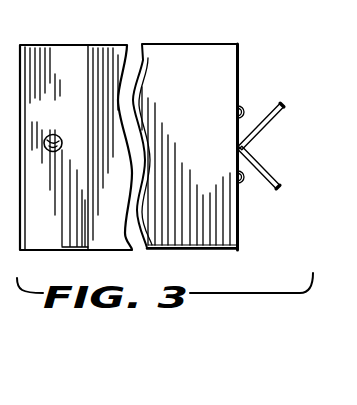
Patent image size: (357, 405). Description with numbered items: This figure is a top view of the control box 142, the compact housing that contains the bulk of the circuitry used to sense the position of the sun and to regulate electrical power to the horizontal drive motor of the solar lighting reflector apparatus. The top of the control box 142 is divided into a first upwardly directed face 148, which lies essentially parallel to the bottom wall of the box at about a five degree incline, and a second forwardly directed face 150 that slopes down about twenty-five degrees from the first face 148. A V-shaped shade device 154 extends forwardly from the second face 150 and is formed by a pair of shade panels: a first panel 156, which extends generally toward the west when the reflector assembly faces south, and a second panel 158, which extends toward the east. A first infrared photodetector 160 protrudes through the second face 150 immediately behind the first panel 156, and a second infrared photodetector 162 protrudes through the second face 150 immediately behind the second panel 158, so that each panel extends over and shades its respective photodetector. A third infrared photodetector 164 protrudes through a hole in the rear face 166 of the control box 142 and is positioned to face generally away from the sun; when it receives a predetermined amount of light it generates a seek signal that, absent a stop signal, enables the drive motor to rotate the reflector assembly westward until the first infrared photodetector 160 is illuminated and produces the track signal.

The control box 142 is at (187, 53).
The first upwardly directed face 148 is at (201, 237).
The second forwardly directed face 150 is at (238, 228).
The V-shaped shade device 154 is at (286, 144).
The first shade panel 156 is at (280, 178).
The second shade panel 158 is at (282, 107).
The first infrared photodetector 160 is at (247, 182).
The second infrared photodetector 162 is at (250, 110).
The third infrared photodetector 164 is at (66, 108).
The rear face 166 is at (52, 58).